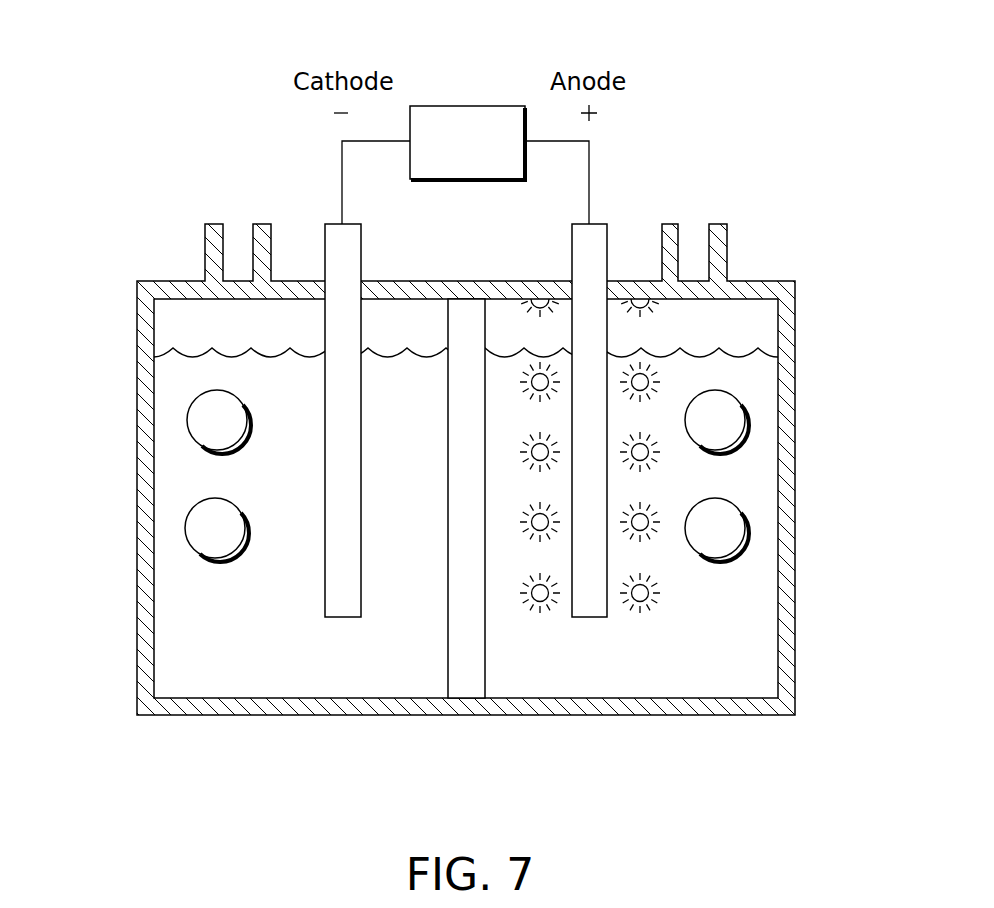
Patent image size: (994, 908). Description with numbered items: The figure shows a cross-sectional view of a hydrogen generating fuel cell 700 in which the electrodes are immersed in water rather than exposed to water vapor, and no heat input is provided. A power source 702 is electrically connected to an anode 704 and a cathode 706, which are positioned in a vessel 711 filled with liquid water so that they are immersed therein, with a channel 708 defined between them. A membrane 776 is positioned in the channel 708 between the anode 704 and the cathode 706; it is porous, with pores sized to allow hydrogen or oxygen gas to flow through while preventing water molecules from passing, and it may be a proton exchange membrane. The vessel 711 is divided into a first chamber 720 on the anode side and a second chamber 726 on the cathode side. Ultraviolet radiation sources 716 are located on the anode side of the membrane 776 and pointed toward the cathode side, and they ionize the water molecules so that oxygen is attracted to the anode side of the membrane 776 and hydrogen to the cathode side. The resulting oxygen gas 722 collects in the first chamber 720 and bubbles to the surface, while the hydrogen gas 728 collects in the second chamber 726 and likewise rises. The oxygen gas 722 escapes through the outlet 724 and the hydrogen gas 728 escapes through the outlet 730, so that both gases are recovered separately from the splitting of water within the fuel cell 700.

The fuel cell 700 is at (790, 51).
The power source 702 is at (468, 106).
The anode 704 is at (606, 226).
The cathode 706 is at (324, 226).
The channel 708 is at (428, 501).
The vessel 711 is at (84, 333).
The ultraviolet radiation sources 716 is at (645, 378).
The first chamber 720 is at (726, 621).
The oxygen gas 722 is at (745, 403).
The outlet 724 is at (693, 232).
The second chamber 726 is at (253, 621).
The hydrogen gas 728 is at (185, 527).
The outlet 730 is at (238, 233).
The membrane 776 is at (469, 684).